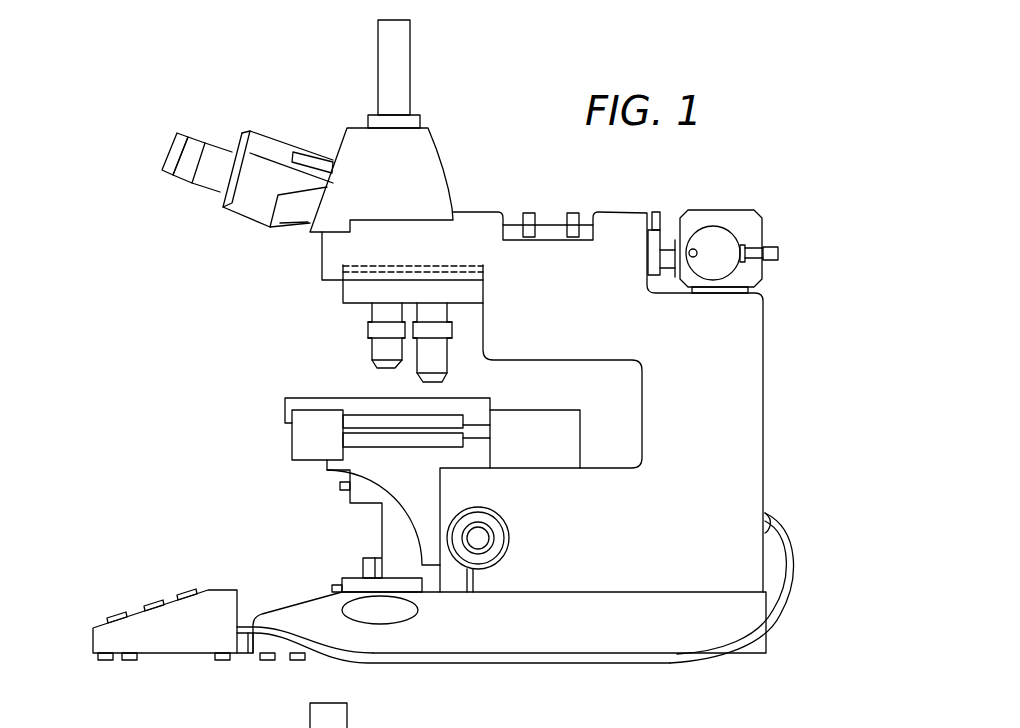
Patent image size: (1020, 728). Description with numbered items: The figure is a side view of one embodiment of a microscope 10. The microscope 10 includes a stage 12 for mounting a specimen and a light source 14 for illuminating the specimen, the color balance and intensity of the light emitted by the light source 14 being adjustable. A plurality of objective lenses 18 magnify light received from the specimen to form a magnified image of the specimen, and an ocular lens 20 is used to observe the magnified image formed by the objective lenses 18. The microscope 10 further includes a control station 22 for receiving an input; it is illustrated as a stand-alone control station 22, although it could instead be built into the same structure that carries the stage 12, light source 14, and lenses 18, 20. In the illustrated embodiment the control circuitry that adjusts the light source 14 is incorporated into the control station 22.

The microscope 10 is at (140, 310).
The stage 12 is at (303, 398).
The light source 14 is at (385, 623).
The objective lenses 18 is at (372, 351).
The ocular lens 20 is at (199, 140).
The control station 22 is at (172, 653).